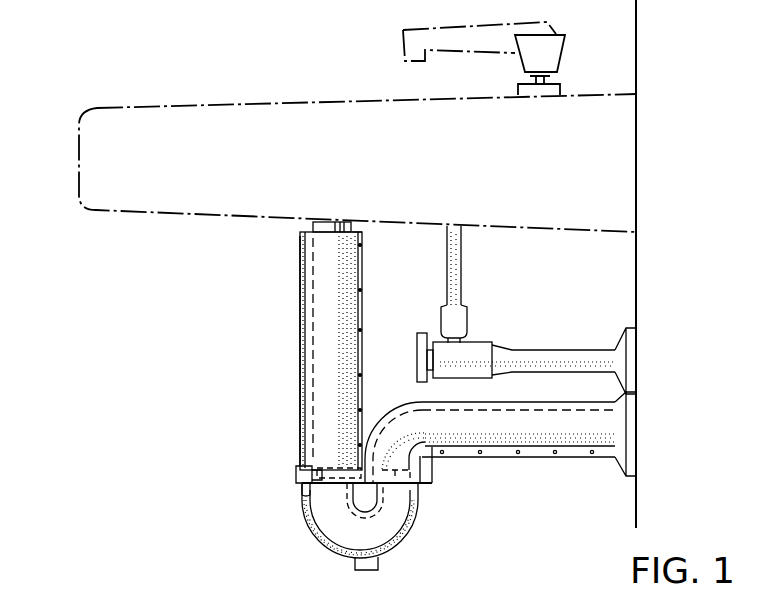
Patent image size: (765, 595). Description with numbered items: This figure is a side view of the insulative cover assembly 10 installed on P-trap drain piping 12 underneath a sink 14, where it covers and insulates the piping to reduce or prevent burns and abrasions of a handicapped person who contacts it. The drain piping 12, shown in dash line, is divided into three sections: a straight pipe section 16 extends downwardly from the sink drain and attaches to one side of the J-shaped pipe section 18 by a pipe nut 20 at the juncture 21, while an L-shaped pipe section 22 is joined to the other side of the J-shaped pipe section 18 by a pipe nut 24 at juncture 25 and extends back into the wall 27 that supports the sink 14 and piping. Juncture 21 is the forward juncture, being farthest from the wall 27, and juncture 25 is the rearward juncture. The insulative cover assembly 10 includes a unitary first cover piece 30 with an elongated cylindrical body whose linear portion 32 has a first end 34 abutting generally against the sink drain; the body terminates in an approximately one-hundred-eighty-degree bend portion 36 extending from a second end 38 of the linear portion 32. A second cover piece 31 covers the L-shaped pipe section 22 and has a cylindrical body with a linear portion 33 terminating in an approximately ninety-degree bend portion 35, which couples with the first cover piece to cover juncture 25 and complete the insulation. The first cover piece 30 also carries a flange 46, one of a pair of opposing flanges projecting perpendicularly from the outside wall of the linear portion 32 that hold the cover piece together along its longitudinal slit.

The insulative cover assembly 10 is at (246, 366).
The P-trap drain piping 12 is at (314, 224).
The sink 14 is at (78, 173).
The straight pipe section 16 is at (300, 278).
The J-shaped pipe section 18 is at (309, 516).
The pipe nut 20 is at (306, 477).
The juncture 21 is at (314, 468).
The L-shaped pipe section 22 is at (494, 412).
The pipe nut 24 is at (426, 484).
The juncture 25 is at (417, 498).
The wall 27 is at (641, 270).
The first cover piece 30 is at (296, 388).
The second cover piece 31 is at (567, 464).
The linear portion 32 is at (312, 411).
The linear portion 33 is at (530, 446).
The first end 34 is at (362, 236).
The 90° bend portion 35 is at (384, 403).
The 180° bend portion 36 is at (322, 535).
The second end 38 is at (303, 489).
The flange 46 is at (358, 270).